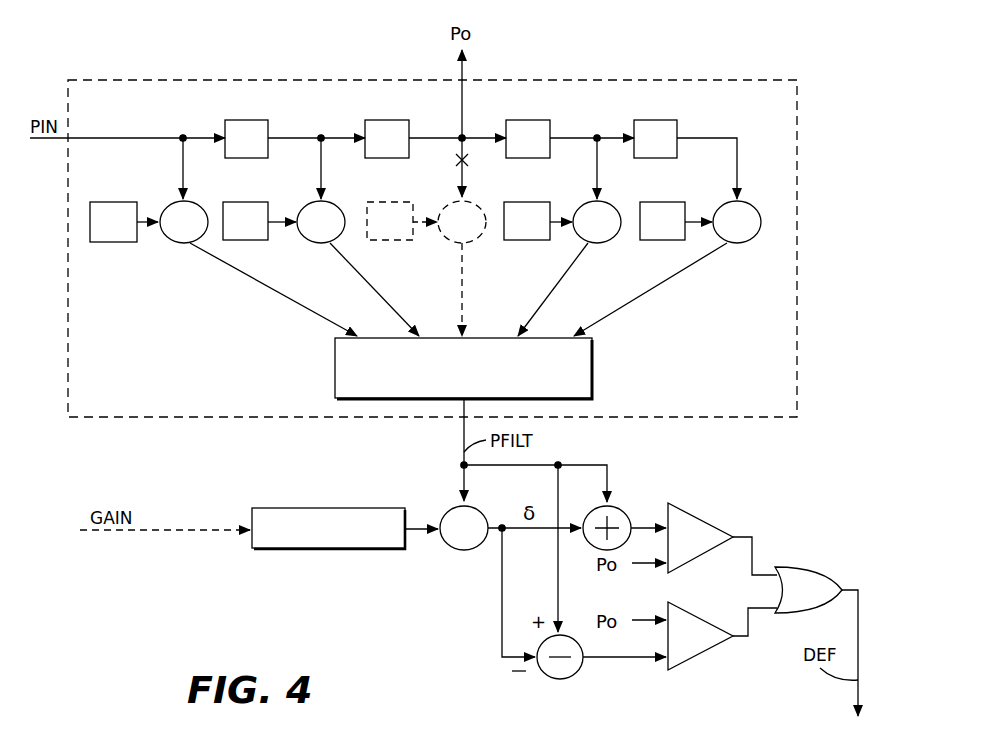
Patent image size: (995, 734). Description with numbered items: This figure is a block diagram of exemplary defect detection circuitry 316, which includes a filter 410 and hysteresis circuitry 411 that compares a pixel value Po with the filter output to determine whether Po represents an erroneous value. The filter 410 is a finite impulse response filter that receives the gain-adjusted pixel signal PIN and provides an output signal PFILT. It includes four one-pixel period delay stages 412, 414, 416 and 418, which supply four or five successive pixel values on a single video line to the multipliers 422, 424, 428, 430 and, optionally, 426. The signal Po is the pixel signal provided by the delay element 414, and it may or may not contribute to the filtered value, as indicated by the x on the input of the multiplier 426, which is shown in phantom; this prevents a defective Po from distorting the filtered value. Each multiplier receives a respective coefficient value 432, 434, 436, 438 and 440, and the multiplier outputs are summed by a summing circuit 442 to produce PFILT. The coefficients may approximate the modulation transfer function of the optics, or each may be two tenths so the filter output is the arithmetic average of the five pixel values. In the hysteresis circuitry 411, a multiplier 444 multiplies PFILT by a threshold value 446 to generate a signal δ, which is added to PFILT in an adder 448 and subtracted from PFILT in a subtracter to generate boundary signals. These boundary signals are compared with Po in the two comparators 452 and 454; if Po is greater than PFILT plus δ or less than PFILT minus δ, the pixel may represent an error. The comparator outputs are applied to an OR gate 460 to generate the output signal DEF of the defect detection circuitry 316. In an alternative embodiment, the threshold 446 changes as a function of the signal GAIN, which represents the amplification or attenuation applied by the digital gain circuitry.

The defect detection circuitry 316 is at (585, 58).
The filter 410 is at (725, 80).
The hysteresis circuitry 411 is at (366, 598).
The one-pixel period delay stage 412 is at (250, 120).
The one-pixel period delay stage 414 is at (392, 120).
The one-pixel period delay stage 416 is at (530, 120).
The one-pixel period delay stage 418 is at (660, 120).
The multiplier 422 is at (205, 204).
The multiplier 424 is at (340, 204).
The multiplier 426 is at (480, 204).
The multiplier 428 is at (615, 204).
The multiplier 430 is at (750, 242).
The coefficient value 432 is at (127, 202).
The coefficient value 434 is at (250, 240).
The coefficient value 436 is at (375, 240).
The coefficient value 438 is at (545, 240).
The coefficient value 440 is at (660, 240).
The summing circuit 442 is at (592, 370).
The multiplier 444 is at (467, 550).
The threshold value 446 is at (290, 508).
The adder 448 is at (622, 506).
The comparator 452 is at (700, 516).
The comparator 454 is at (700, 650).
The OR gate 460 is at (805, 568).